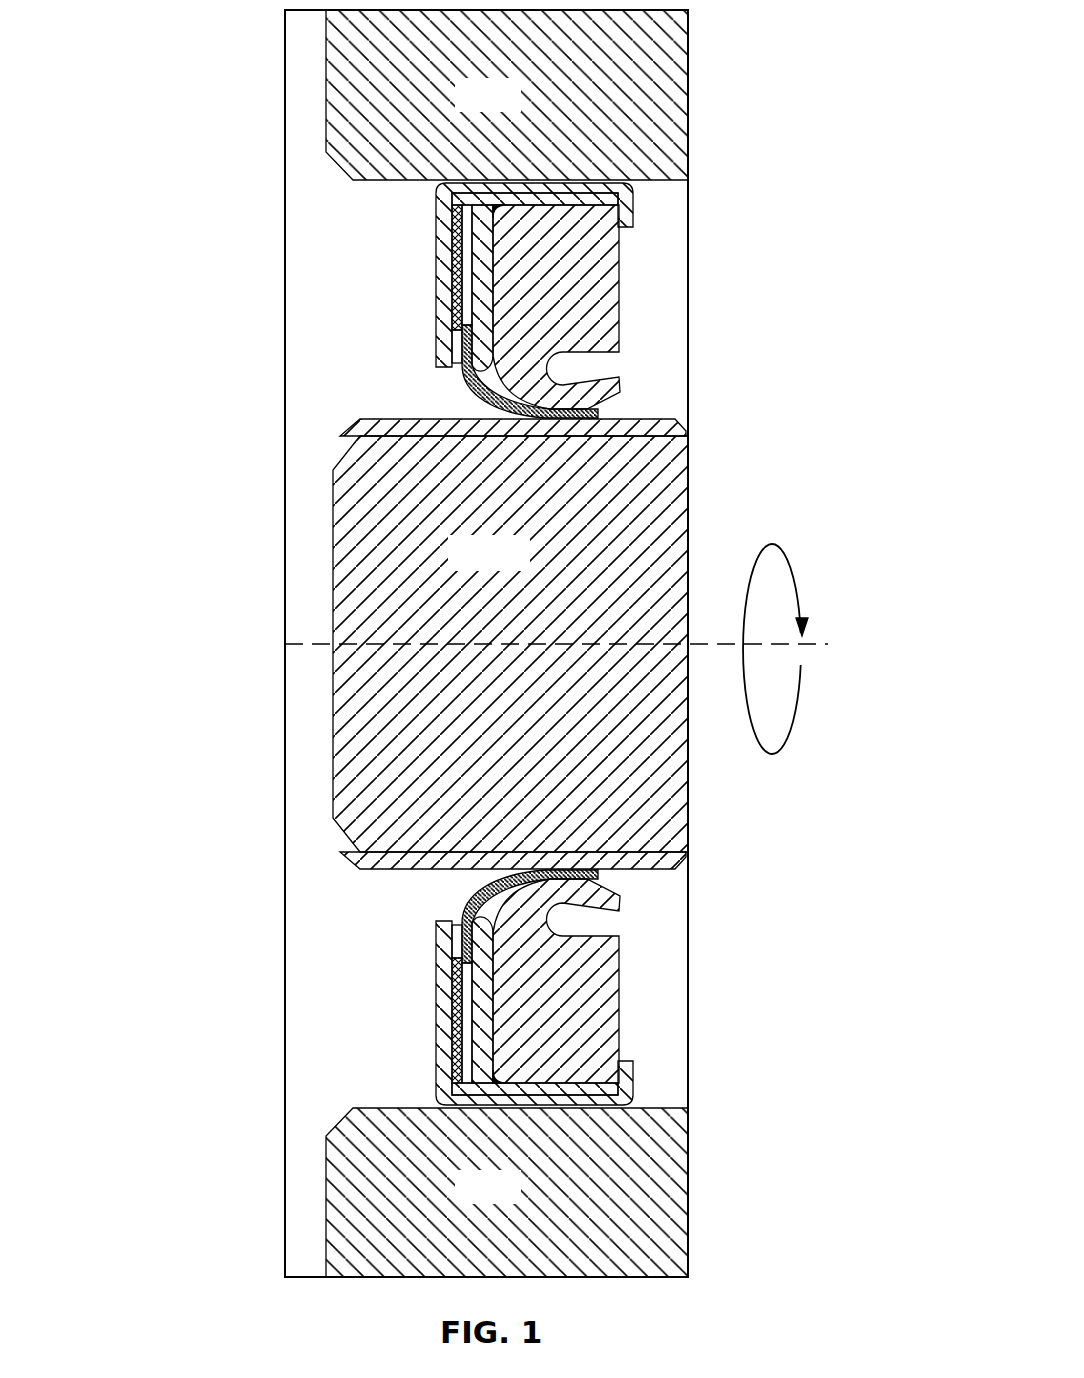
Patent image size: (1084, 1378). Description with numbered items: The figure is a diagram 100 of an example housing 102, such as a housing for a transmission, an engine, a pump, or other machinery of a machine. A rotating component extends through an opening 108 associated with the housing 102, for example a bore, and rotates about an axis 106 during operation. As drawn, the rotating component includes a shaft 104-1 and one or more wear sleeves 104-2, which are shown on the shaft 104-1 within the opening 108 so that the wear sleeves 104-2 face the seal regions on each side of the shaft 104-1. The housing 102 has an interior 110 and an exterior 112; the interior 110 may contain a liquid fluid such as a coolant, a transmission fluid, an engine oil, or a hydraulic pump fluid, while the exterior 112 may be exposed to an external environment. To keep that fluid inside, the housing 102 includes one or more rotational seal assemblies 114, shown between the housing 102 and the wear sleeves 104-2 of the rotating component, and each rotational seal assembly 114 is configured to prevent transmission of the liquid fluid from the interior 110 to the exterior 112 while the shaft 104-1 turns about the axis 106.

The diagram 100 is at (162, 46).
The housing 102 is at (510, 107).
The shaft 104-1 is at (520, 565).
The wear sleeve 104-2 is at (679, 427).
The axis 106 is at (830, 644).
The opening 108 is at (508, 631).
The interior 110 is at (874, 209).
The exterior 112 is at (142, 209).
The rotational seal assembly 114 is at (490, 644).